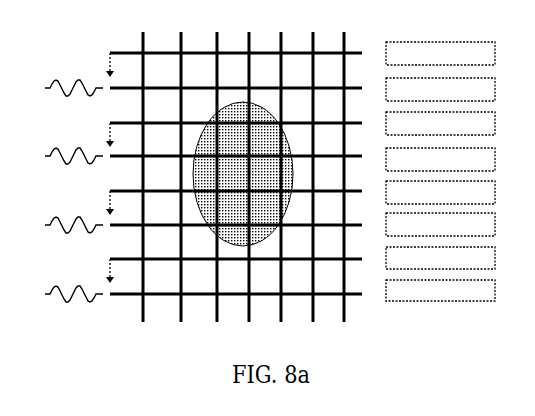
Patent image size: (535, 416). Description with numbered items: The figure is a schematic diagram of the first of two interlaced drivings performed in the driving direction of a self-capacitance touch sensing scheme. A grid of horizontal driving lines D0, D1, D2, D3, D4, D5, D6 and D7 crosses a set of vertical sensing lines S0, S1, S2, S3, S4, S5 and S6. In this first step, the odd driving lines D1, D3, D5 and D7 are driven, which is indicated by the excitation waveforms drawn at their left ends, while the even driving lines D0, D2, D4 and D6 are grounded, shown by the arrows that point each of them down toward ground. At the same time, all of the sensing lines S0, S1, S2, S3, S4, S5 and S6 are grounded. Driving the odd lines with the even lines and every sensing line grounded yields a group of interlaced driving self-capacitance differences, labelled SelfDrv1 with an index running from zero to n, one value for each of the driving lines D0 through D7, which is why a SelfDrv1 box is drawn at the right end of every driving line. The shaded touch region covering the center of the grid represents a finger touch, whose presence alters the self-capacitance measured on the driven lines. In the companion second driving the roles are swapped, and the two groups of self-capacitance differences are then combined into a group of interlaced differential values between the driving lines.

The sensing line S0 is at (143, 167).
The sensing line S1 is at (181, 167).
The sensing line S2 is at (217, 167).
The sensing line S3 is at (249, 167).
The sensing line S4 is at (281, 167).
The sensing line S5 is at (313, 167).
The sensing line S6 is at (344, 167).
The driving line D0 is at (300, 59).
The driving line D1 is at (270, 89).
The driving line D2 is at (300, 129).
The driving line D3 is at (270, 159).
The driving line D4 is at (300, 198).
The driving line D5 is at (270, 224).
The driving line D6 is at (300, 265).
The driving line D7 is at (270, 292).
The touch region touch is at (243, 174).